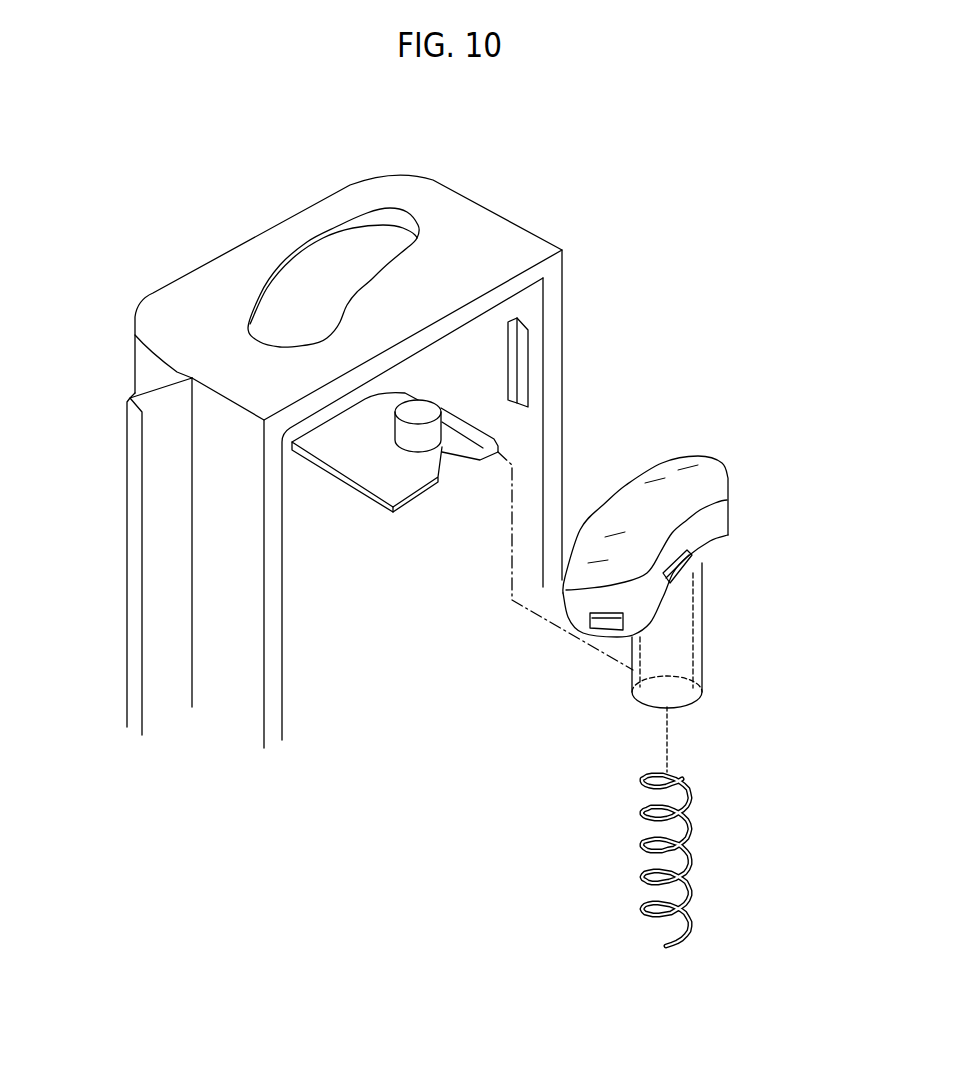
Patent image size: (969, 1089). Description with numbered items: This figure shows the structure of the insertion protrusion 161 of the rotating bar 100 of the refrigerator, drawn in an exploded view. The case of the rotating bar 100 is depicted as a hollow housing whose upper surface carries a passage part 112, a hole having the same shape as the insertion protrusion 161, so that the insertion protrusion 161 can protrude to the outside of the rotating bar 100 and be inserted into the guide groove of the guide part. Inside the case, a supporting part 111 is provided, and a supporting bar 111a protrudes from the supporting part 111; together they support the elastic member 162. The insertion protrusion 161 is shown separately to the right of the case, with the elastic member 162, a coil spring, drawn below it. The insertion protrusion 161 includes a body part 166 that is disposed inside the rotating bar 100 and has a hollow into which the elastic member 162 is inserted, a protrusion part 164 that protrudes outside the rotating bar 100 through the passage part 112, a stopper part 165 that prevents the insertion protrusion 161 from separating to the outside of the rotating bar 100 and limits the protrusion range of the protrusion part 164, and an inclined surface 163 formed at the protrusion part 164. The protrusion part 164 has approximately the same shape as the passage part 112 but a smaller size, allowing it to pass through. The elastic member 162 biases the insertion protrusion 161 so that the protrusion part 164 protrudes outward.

The rotating bar 100 is at (300, 424).
The supporting part 111 is at (368, 490).
The supporting bar 111a is at (413, 442).
The passage part 112 is at (331, 270).
The insertion protrusion 161 is at (738, 537).
The elastic member 162 is at (688, 860).
The inclined surface 163 is at (697, 460).
The protrusion part 164 is at (727, 505).
The stopper part 165 is at (727, 533).
The body part 166 is at (737, 623).